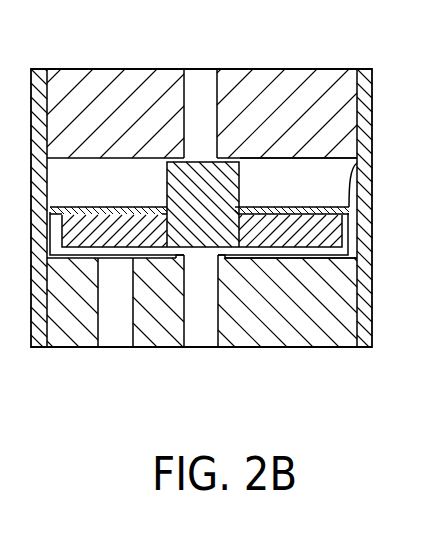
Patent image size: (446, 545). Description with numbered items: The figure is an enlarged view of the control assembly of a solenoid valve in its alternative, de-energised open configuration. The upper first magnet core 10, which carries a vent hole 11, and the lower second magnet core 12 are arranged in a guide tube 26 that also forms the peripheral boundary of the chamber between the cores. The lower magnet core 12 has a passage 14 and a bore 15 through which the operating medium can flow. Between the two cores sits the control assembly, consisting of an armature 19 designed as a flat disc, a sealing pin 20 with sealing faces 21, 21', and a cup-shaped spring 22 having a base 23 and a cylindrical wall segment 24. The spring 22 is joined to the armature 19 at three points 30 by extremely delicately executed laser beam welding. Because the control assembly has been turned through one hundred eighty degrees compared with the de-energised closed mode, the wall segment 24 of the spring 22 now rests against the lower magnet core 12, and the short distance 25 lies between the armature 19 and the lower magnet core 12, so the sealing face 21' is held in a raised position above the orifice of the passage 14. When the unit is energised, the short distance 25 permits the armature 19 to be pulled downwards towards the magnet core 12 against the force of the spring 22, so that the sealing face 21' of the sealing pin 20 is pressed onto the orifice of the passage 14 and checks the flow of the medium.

The first magnet core 10 is at (103, 113).
The vent hole 11 is at (205, 80).
The second magnet core 12 is at (250, 330).
The passage 14 is at (207, 330).
The bore 15 is at (113, 327).
The armature 19 is at (280, 232).
The sealing pin 20 is at (185, 220).
The sealing face 21 is at (216, 82).
The sealing face 21' is at (199, 319).
The spring 22 is at (358, 164).
The base 23 is at (281, 207).
The cylindrical wall segment 24 is at (362, 207).
The short distance 25 is at (282, 253).
The guide tube 26 is at (40, 93).
The points 30 is at (313, 228).